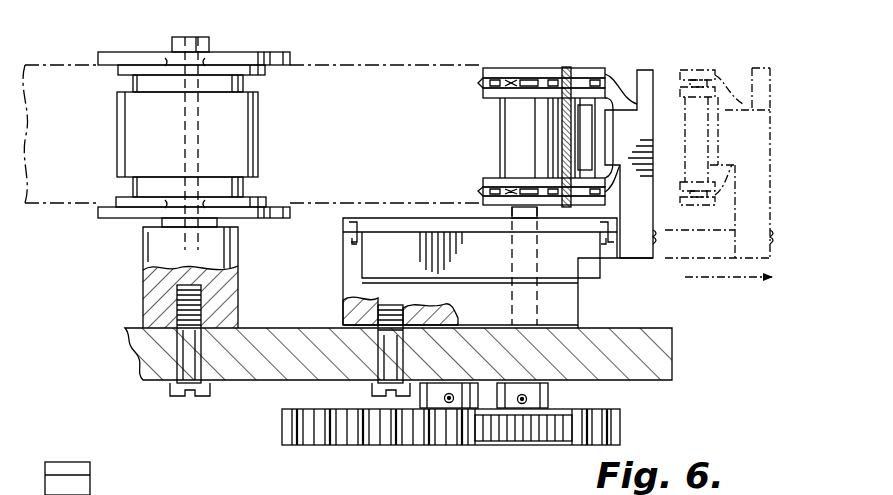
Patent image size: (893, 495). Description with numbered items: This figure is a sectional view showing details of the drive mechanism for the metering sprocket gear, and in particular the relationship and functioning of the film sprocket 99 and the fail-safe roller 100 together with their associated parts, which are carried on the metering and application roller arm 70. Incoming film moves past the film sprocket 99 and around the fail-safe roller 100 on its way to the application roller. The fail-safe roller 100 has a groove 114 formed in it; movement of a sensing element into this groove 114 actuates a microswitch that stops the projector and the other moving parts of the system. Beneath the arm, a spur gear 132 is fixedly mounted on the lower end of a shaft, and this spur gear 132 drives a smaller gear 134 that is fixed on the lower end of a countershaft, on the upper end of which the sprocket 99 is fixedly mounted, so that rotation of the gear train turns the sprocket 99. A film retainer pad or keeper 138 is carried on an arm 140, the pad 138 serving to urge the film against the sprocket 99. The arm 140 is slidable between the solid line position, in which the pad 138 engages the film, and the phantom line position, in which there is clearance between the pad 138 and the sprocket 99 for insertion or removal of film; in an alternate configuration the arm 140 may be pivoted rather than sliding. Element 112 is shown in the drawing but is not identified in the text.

The metering and application roller arm 70 is at (680, 354).
The film sprocket 99 is at (512, 163).
The fail-safe roller 100 is at (226, 126).
The drive bar 112 is at (562, 122).
The groove 114 is at (128, 83).
The spur gear 132 is at (312, 408).
The smaller gear 134 is at (548, 428).
The film retainer pad 138 is at (590, 66).
The arm 140 is at (634, 247).